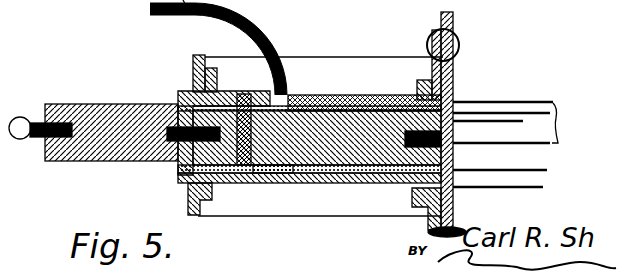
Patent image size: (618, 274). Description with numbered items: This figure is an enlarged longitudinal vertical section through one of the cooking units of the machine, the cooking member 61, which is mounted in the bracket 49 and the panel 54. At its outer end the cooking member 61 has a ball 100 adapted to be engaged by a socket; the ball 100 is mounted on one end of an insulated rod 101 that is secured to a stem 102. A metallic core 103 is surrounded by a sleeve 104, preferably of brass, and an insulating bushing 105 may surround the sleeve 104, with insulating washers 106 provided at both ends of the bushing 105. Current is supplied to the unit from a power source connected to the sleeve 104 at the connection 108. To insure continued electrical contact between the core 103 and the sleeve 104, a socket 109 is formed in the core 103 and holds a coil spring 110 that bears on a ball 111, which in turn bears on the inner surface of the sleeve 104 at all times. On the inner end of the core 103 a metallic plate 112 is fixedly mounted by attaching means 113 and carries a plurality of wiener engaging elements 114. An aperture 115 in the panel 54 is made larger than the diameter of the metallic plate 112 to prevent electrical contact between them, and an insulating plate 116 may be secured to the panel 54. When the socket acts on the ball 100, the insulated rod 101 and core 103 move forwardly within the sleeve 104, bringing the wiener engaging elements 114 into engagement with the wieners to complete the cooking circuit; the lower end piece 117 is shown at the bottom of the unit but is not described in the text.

The bracket 49 is at (273, 206).
The panel 54 is at (455, 68).
The cooking member 61 is at (188, 80).
The ball 100 is at (22, 118).
The insulated rod 101 is at (122, 143).
The stem 102 is at (168, 113).
The metallic core 103 is at (352, 108).
The sleeve 104 is at (320, 183).
The insulating bushing 105 is at (393, 97).
The insulating washers 106 is at (216, 67).
The connection 108 is at (288, 91).
The socket 109 is at (236, 182).
The coil spring 110 is at (275, 179).
The ball 111 is at (244, 95).
The metallic plate 112 is at (450, 150).
The attaching means 113 is at (448, 128).
The wiener engaging elements 114 is at (553, 102).
The aperture 115 is at (450, 198).
The insulating plate 116 is at (436, 32).
The lower end piece 117 is at (190, 188).